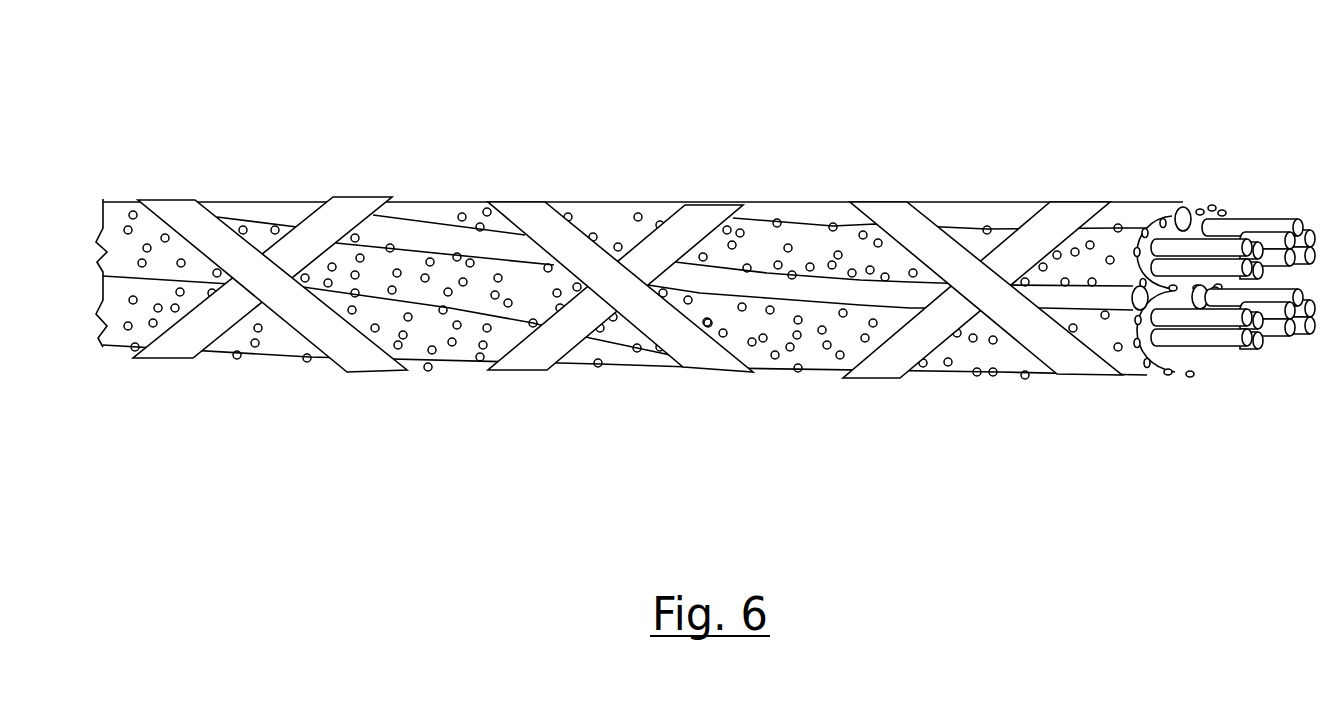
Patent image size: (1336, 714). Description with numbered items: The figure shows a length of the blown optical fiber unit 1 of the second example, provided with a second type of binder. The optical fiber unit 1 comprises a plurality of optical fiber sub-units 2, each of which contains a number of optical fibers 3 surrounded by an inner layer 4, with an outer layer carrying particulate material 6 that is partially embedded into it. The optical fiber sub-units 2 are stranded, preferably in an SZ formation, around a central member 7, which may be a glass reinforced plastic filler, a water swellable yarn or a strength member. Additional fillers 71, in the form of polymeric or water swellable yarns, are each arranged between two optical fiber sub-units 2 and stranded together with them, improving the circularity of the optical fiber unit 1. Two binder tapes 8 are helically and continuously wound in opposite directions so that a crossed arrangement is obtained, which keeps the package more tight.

The optical fiber unit 1 is at (684, 132).
The optical fiber sub-unit 2 is at (797, 235).
The optical fiber 3 is at (1250, 222).
The inner layer 4 is at (1157, 363).
The particulate material 6 is at (289, 322).
The central member 7 is at (1200, 302).
The additional filler 71 is at (952, 213).
The binder tape 8 is at (173, 200).